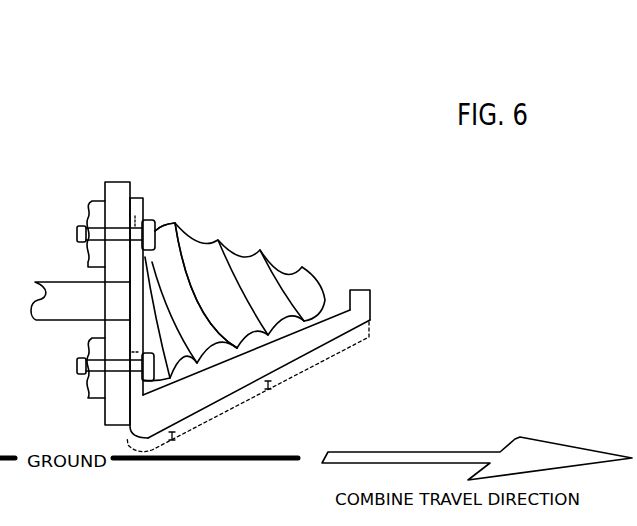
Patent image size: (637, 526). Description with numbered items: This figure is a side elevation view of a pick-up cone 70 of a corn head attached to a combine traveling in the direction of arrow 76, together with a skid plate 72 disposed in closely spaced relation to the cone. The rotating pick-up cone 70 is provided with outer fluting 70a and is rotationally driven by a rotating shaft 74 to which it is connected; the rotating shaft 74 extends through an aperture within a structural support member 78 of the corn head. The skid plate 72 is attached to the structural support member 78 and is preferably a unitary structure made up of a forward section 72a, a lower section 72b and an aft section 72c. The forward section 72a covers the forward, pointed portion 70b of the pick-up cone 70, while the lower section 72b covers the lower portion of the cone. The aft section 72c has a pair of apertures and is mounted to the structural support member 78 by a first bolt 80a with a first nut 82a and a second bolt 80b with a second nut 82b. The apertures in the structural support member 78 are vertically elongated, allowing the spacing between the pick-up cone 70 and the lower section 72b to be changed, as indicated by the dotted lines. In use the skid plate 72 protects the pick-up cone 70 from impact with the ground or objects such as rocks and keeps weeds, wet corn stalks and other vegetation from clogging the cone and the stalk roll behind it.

The pick-up cone 70 is at (258, 276).
The outer fluting 70a is at (195, 284).
The forward, pointed portion 70b is at (318, 285).
The skid plate 72 is at (229, 357).
The forward section 72a is at (362, 307).
The lower section 72b is at (227, 383).
The aft section 72c is at (137, 263).
The rotating shaft 74 is at (53, 307).
The arrow 76 is at (522, 448).
The structural support member 78 is at (118, 187).
The first bolt 80a is at (120, 232).
The second bolt 80b is at (120, 367).
The first nut 82a is at (93, 203).
The second nut 82b is at (83, 387).